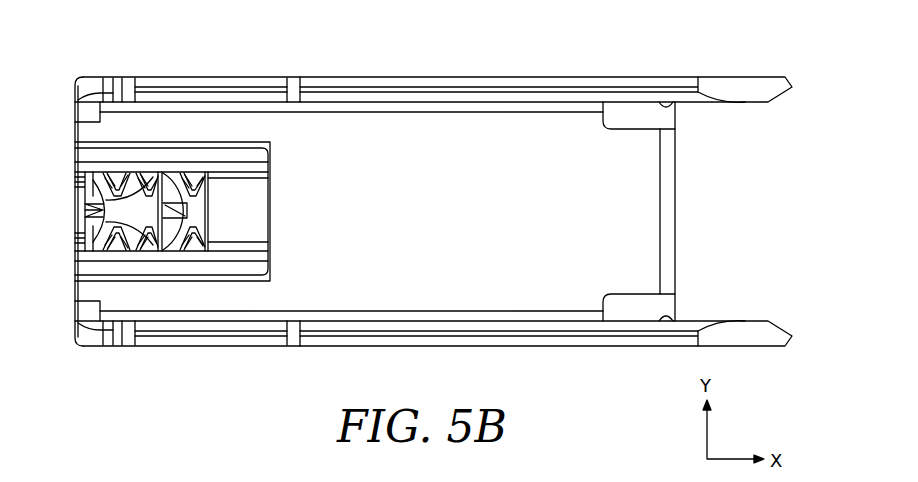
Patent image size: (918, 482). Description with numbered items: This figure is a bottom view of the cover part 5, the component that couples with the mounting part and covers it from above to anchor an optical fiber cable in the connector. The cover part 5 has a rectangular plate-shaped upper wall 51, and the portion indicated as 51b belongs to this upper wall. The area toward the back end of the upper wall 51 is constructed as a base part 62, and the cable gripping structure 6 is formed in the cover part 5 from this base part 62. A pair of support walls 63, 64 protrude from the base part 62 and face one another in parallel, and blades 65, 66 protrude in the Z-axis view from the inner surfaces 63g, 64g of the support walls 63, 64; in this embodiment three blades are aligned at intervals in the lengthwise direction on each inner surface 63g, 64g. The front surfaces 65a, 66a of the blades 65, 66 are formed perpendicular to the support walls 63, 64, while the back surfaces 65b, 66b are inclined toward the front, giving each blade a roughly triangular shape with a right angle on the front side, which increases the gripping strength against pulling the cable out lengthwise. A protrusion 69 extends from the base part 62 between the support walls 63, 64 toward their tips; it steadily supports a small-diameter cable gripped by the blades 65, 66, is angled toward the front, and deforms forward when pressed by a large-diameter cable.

The cover part 5 is at (595, 74).
The cable gripping structure 6 is at (283, 140).
The upper wall 51 is at (462, 155).
The base part 62 is at (639, 211).
The lower frame plate portion 51b is at (462, 270).
The support wall 63 is at (249, 268).
The support wall 64 is at (249, 155).
The inner surface of support wall 63g is at (104, 248).
The inner surface of support wall 64g is at (104, 176).
The blade 65 is at (156, 251).
The front surface of blade 65a is at (173, 251).
The back surface of blade 65b is at (93, 226).
The blade 66 is at (156, 172).
The front surface of blade 66a is at (173, 172).
The back surface of blade 66b is at (93, 189).
The protrusion 69 is at (90, 208).